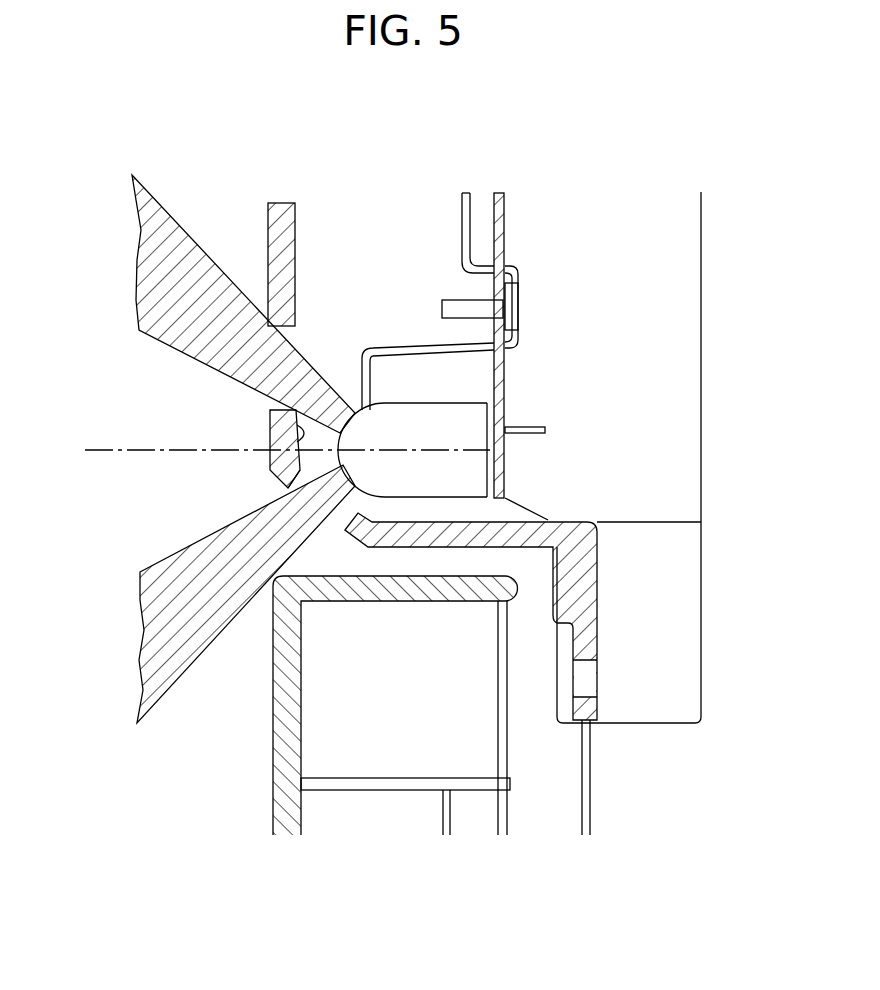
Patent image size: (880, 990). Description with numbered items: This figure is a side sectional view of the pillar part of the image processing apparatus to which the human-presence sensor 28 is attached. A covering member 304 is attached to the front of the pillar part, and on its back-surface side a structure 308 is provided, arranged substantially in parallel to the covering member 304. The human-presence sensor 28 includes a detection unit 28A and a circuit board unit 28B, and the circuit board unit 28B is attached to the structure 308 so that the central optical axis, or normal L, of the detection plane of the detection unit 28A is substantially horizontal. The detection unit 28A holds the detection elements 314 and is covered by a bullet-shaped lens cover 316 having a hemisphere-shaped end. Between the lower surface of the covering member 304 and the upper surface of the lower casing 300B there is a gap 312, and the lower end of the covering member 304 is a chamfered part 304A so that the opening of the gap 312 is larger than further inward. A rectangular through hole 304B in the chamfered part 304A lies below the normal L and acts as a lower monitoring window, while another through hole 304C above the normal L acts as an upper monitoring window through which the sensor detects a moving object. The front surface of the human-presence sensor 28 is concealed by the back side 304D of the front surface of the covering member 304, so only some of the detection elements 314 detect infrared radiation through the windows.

The human-presence sensor 28 is at (446, 148).
The detection unit 28A is at (451, 323).
The circuit board unit 28B is at (493, 237).
The covering member 304 is at (282, 236).
The chamfered part 304A is at (280, 481).
The through hole 304B is at (300, 505).
The through hole 304C is at (285, 335).
The back side of the front surface of the covering member 304D is at (297, 425).
The structure 308 is at (680, 298).
The gap 312 is at (382, 566).
The detection elements 314 is at (490, 455).
The lens cover 316 is at (460, 410).
The lower casing 300B is at (287, 762).
The normal L is at (107, 450).